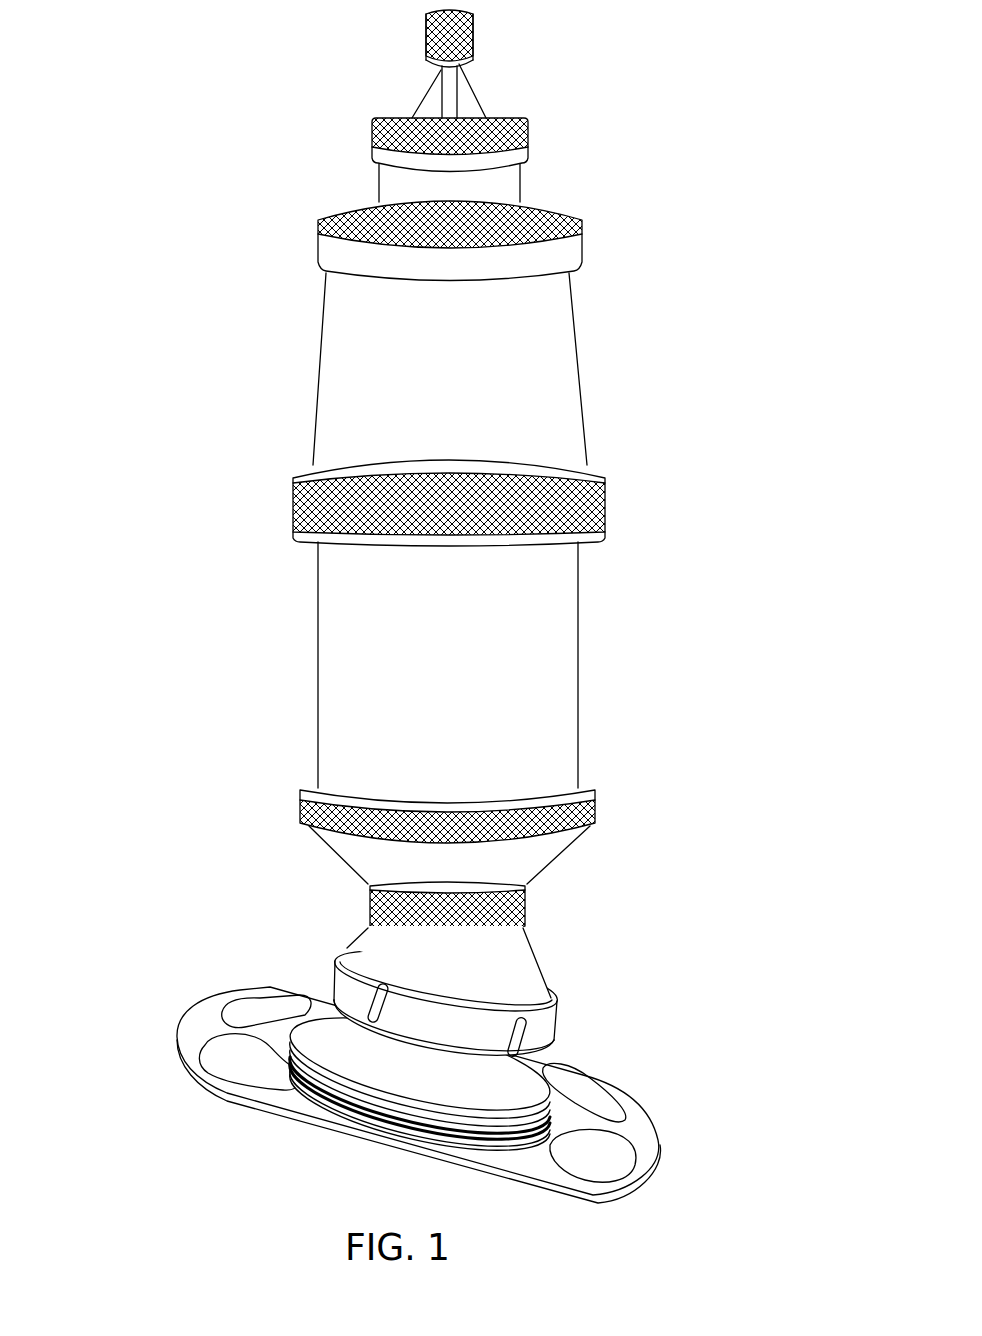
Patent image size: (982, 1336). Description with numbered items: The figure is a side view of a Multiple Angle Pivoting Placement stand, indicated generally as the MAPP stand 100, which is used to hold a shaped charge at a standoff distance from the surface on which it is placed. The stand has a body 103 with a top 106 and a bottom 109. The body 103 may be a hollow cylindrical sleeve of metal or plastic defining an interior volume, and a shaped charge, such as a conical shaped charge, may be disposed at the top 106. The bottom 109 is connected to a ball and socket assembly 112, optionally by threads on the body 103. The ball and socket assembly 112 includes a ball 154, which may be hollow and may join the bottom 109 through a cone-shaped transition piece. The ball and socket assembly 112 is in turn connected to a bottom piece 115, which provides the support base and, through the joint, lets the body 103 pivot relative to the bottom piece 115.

The Multiple Angle Pivoting Placement (MAPP) stand 100 is at (178, 90).
The body 103 is at (567, 608).
The top 106 is at (333, 330).
The bottom 109 is at (315, 790).
The ball and socket assembly 112 is at (590, 948).
The bottom piece 115 is at (638, 1135).
The ball 154 is at (337, 855).